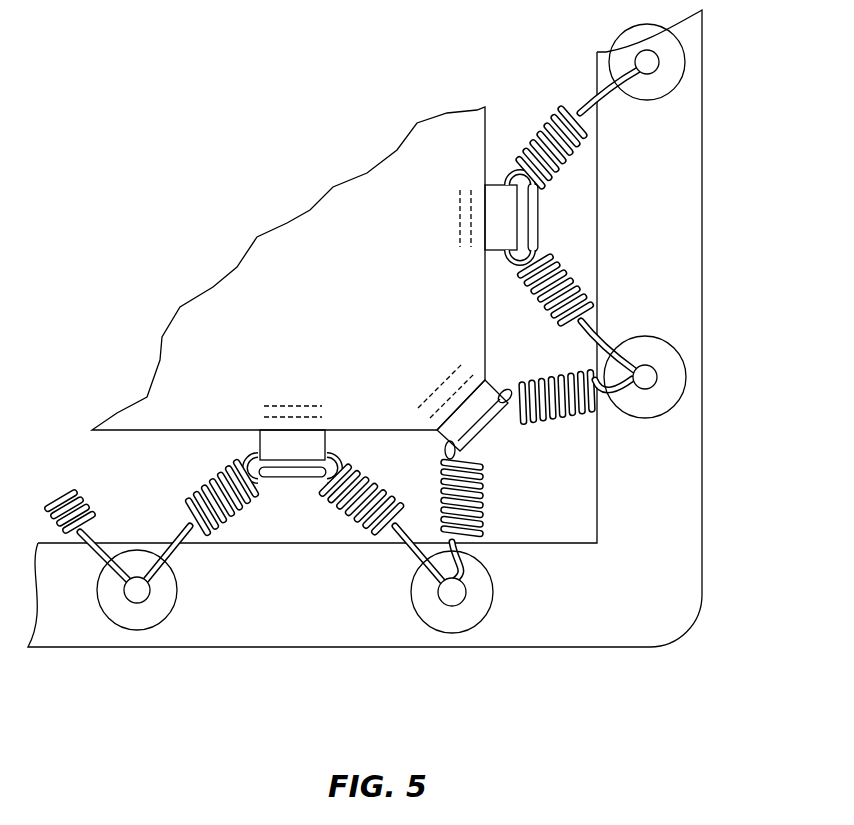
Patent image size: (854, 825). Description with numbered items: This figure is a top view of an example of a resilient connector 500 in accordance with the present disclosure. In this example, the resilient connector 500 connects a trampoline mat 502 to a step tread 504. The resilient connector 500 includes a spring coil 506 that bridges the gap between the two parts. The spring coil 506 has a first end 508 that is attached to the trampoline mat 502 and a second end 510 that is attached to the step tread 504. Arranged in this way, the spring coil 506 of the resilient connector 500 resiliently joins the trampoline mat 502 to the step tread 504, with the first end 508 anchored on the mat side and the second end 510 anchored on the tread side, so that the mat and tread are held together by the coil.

The resilient connector 500 is at (208, 177).
The trampoline mat 502 is at (347, 317).
The step tread 504 is at (657, 88).
The spring coil 506 is at (537, 133).
The first end 508 is at (158, 543).
The second end 510 is at (265, 450).